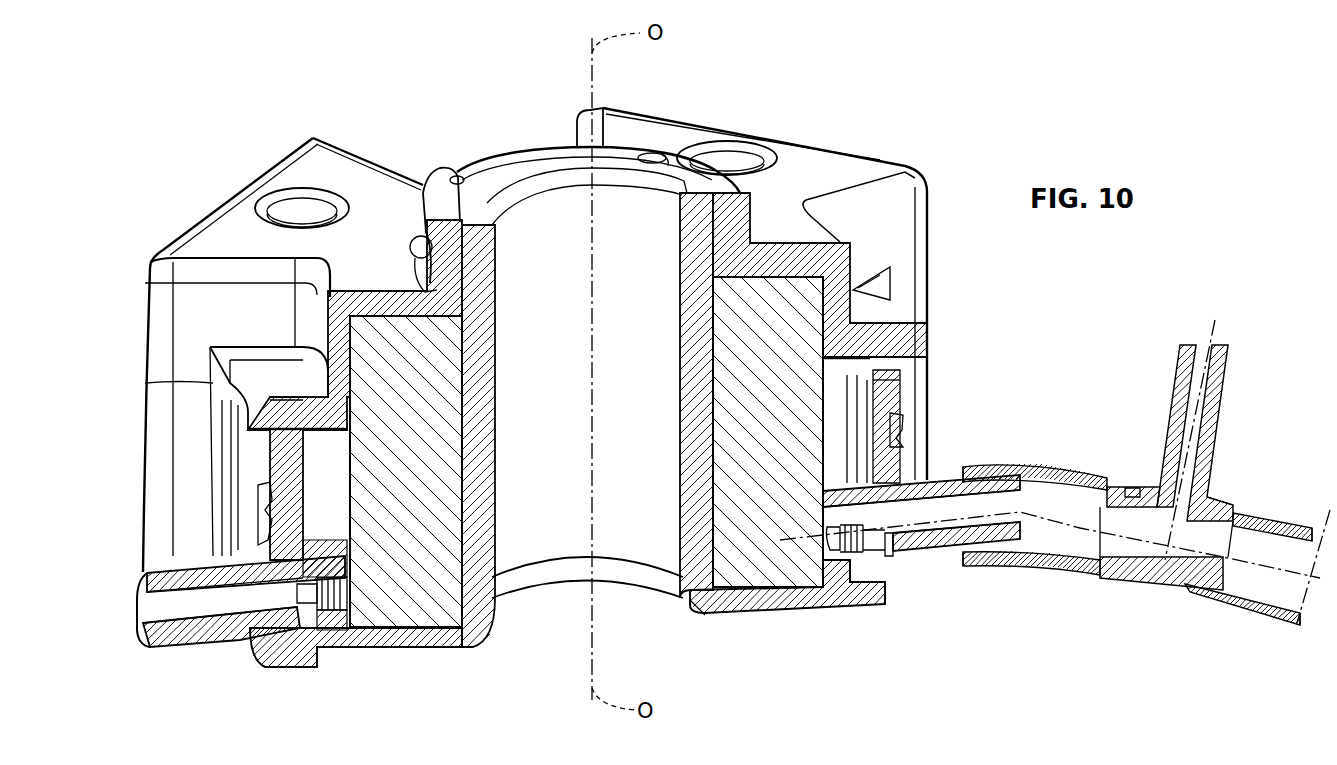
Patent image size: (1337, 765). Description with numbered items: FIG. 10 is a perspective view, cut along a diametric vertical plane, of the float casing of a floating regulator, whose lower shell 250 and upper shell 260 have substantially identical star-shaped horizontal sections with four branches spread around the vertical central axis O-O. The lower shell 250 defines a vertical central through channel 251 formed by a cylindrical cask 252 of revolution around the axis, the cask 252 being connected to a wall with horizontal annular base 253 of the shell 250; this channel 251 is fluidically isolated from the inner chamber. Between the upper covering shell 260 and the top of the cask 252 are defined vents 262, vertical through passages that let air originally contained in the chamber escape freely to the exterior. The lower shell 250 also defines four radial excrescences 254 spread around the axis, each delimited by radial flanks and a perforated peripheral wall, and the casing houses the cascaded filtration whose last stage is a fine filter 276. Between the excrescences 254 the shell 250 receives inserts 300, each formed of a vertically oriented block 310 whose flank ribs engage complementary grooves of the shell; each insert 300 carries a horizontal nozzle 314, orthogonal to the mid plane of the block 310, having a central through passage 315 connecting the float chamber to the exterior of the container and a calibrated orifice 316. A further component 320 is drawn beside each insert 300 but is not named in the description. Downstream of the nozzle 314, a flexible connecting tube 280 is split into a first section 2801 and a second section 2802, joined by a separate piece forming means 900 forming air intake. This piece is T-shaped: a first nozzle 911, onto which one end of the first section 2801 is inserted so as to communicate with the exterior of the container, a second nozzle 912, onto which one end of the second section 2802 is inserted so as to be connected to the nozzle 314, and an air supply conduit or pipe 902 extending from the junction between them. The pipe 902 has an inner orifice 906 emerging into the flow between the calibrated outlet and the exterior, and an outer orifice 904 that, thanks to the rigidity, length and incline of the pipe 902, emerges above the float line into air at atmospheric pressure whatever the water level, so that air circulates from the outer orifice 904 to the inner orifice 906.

The lower shell 250 is at (828, 627).
The vertical central through channel 251 is at (552, 404).
The cylindrical cask 252 is at (703, 372).
The wall with horizontal annular base 253 is at (735, 605).
The radial excrescences 254 is at (230, 162).
The upper shell 260 is at (227, 237).
The vents 262 is at (452, 172).
The fine filter 276 is at (768, 447).
The flexible connecting tube 280 is at (1057, 463).
The first section of the flexible connecting tube 2801 is at (1245, 598).
The second section of the flexible connecting tube 2802 is at (1078, 560).
The insert 300 is at (242, 493).
The block 310 is at (290, 445).
The nozzle 314 is at (207, 640).
The central through passage 315 is at (227, 603).
The calibrated orifice 316 is at (353, 596).
The bracket 320 is at (242, 515).
The means forming air intake 900 is at (1200, 463).
The air supply conduit or pipe 902 is at (1210, 440).
The outer orifice 904 is at (1220, 335).
The inner orifice 906 is at (1162, 518).
The first nozzle 911 is at (1225, 515).
The second nozzle 912 is at (1127, 490).